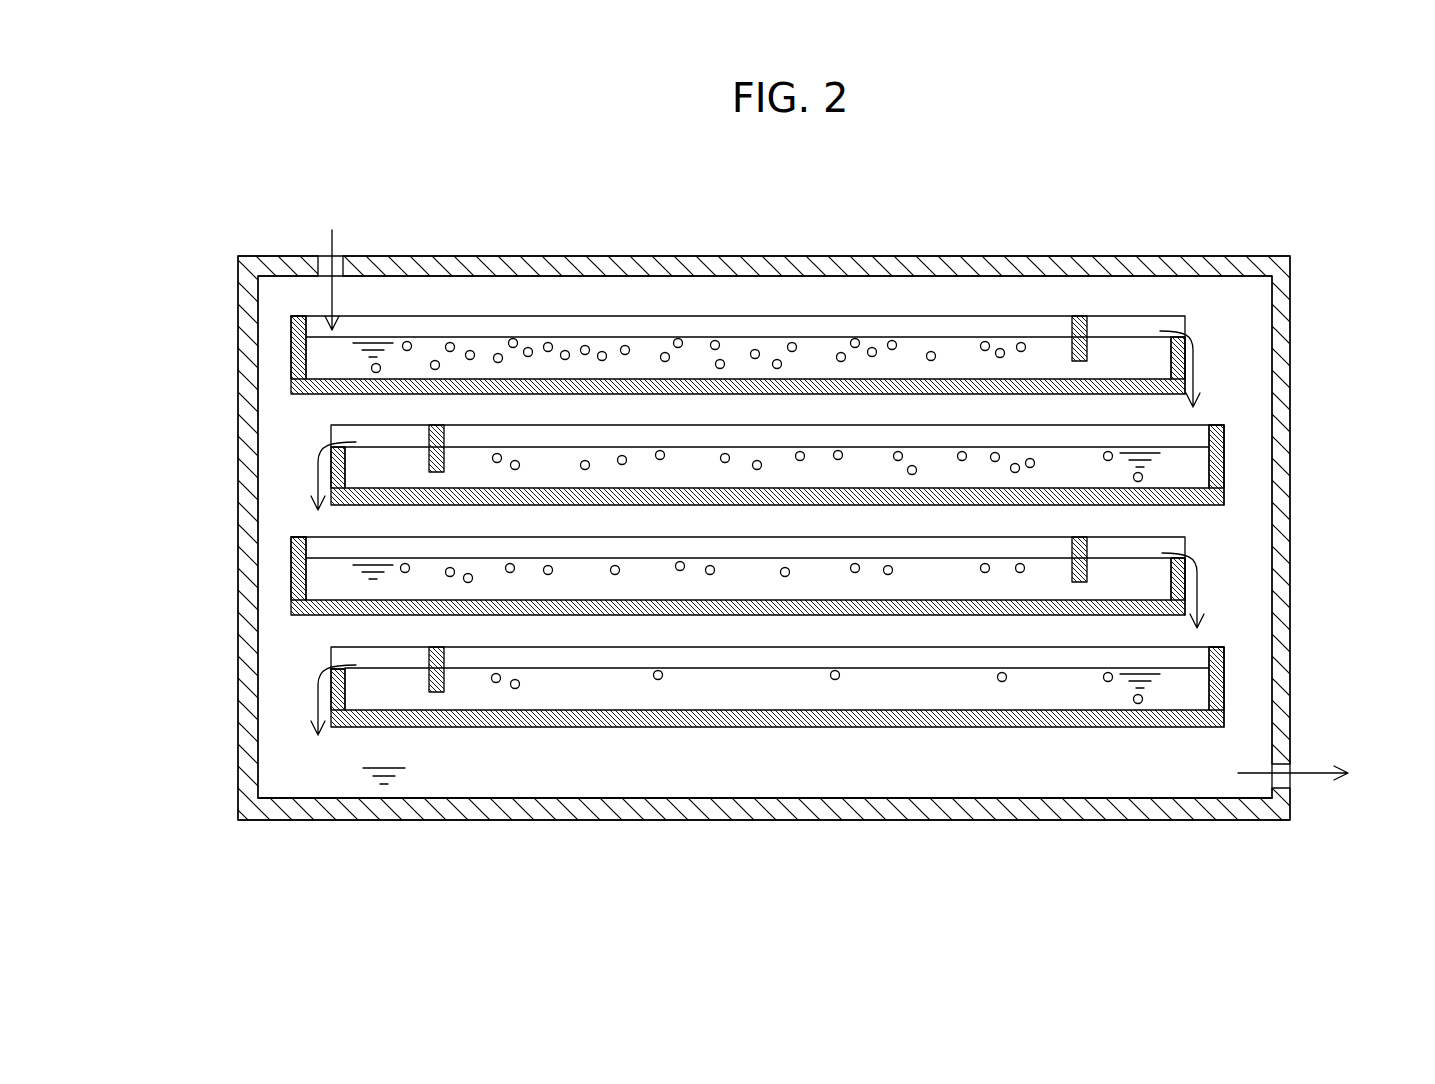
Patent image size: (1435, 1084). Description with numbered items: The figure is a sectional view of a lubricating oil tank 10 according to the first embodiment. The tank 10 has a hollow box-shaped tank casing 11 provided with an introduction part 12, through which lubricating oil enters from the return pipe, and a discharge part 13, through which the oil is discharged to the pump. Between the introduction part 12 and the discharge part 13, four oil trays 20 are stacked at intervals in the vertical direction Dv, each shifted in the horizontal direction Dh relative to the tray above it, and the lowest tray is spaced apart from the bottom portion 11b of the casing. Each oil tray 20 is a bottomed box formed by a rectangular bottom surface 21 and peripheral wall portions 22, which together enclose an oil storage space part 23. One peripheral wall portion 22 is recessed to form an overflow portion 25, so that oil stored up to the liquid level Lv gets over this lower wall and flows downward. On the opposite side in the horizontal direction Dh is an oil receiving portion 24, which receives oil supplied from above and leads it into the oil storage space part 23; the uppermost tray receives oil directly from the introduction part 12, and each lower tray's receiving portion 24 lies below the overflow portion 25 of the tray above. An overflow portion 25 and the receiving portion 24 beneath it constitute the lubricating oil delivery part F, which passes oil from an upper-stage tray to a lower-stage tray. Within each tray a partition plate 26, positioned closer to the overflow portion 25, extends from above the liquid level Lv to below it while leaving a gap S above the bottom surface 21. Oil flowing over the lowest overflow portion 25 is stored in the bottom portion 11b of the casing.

The lubricating oil tank 10 is at (1130, 257).
The tank casing 11 is at (828, 256).
The bottom portion 11b is at (700, 795).
The introduction part 12 is at (336, 262).
The discharge part 13 is at (1277, 780).
The oil tray 20 is at (291, 361).
The bottom surface 21 is at (700, 380).
The peripheral wall portion 22 is at (291, 333).
The oil storage space part 23 is at (907, 362).
The oil receiving portion 24 is at (338, 330).
The overflow portion 25 is at (1177, 340).
The partition plate 26 is at (1078, 316).
The gap S is at (437, 481).
The liquid level Lv is at (958, 337).
The lubricating oil delivery part F is at (1210, 407).
The vertical direction Dv is at (185, 747).
The horizontal direction Dh is at (833, 912).